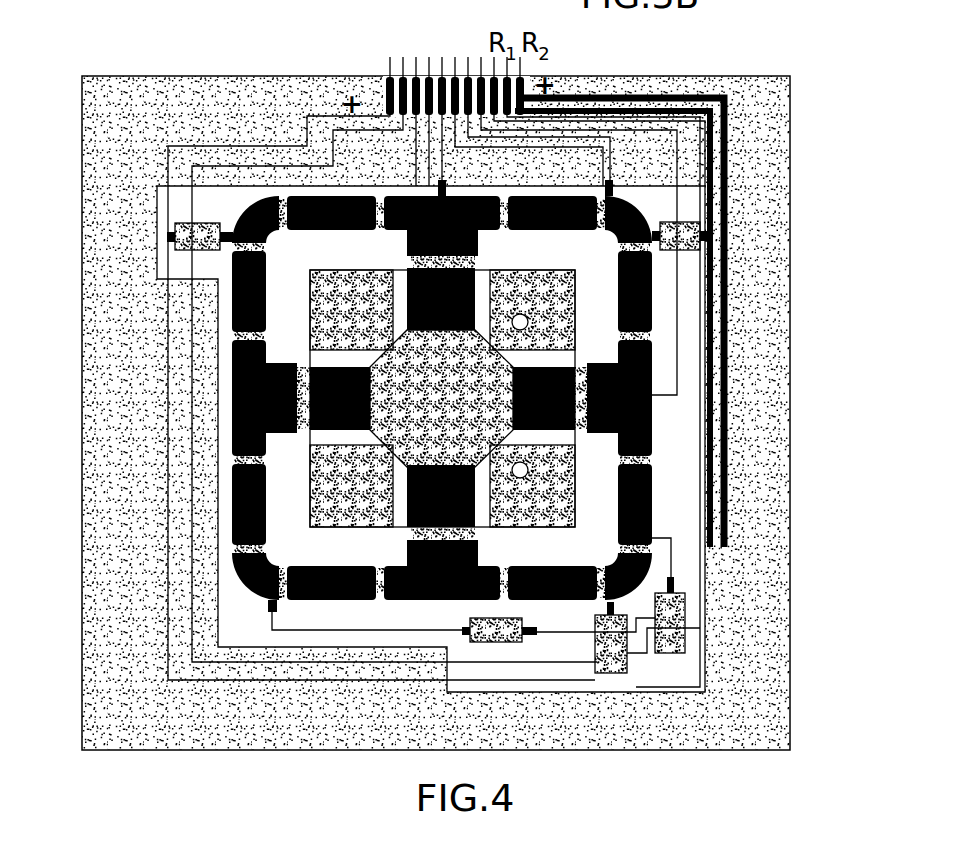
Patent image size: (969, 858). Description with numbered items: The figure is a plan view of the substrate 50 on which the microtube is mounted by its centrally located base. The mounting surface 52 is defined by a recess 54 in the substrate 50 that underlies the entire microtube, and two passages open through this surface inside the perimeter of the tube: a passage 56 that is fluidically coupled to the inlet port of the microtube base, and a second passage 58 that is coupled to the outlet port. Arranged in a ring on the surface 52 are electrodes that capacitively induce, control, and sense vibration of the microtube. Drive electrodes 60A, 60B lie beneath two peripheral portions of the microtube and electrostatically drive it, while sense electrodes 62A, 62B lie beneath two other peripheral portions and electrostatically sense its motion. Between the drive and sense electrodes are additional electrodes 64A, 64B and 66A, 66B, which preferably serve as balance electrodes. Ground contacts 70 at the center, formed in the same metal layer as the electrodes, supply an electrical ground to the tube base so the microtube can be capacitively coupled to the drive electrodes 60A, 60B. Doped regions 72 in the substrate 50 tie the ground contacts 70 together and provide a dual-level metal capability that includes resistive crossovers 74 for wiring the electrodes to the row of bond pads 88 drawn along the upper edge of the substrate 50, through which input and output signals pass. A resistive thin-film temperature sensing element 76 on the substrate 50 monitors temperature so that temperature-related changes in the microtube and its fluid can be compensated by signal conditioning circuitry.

The substrate 50 is at (225, 50).
The surface 52 is at (240, 193).
The recess 54 is at (258, 642).
The passage 56 is at (527, 475).
The second passage 58 is at (525, 318).
The drive electrode 60A is at (457, 603).
The drive electrode 60B is at (232, 383).
The sense electrode 62A is at (467, 196).
The sense electrode 62B is at (652, 408).
The balance electrode 64A is at (232, 293).
The balance electrode 64B is at (340, 196).
The balance electrode 66A is at (633, 196).
The balance electrode 66B is at (237, 210).
The ground contact 70 is at (372, 362).
The doped region 72 is at (203, 223).
The resistive crossover 74 is at (183, 250).
The temperature sensing element 76 is at (745, 372).
The connector pads 88 is at (415, 42).